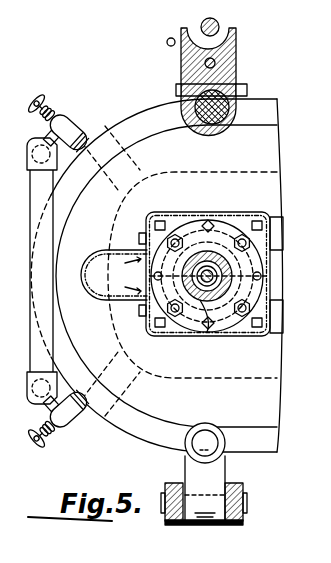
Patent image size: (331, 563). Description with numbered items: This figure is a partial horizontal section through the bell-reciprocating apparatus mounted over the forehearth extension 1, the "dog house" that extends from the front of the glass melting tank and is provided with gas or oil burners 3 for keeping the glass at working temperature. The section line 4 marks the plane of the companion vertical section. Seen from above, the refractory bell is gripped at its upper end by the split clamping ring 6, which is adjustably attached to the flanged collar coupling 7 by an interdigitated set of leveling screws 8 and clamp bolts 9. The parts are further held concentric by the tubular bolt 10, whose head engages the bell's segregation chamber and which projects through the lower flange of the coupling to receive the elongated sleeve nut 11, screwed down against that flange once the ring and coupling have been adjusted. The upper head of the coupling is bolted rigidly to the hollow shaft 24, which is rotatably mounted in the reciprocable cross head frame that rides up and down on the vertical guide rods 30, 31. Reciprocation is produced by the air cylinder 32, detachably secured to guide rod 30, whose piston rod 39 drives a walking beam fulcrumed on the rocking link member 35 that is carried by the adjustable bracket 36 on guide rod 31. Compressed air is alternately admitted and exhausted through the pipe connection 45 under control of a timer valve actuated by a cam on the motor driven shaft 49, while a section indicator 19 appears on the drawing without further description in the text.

The forehearth extension 1 is at (156, 128).
The gas or oil burner 3 is at (70, 121).
The section line 4 is at (200, 557).
The split clamping ring 6 is at (142, 305).
The flanged collar coupling 7 is at (207, 300).
The leveling screw 8 is at (208, 220).
The clamp bolt 9 is at (245, 234).
The tubular bolt 10 is at (205, 262).
The elongated sleeve nut 11 is at (232, 246).
The cover plate 19 is at (236, 220).
The hollow shaft 24 is at (194, 246).
The vertical guide rod 30 is at (234, 120).
The vertical guide rod 31 is at (214, 444).
The air cylinder 32 is at (238, 58).
The rocking link member 35 is at (163, 503).
The adjustable bracket 36 is at (187, 467).
The piston rod 39 is at (219, 24).
The pipe connection 45 is at (167, 43).
The motor driven shaft 49 is at (205, 66).